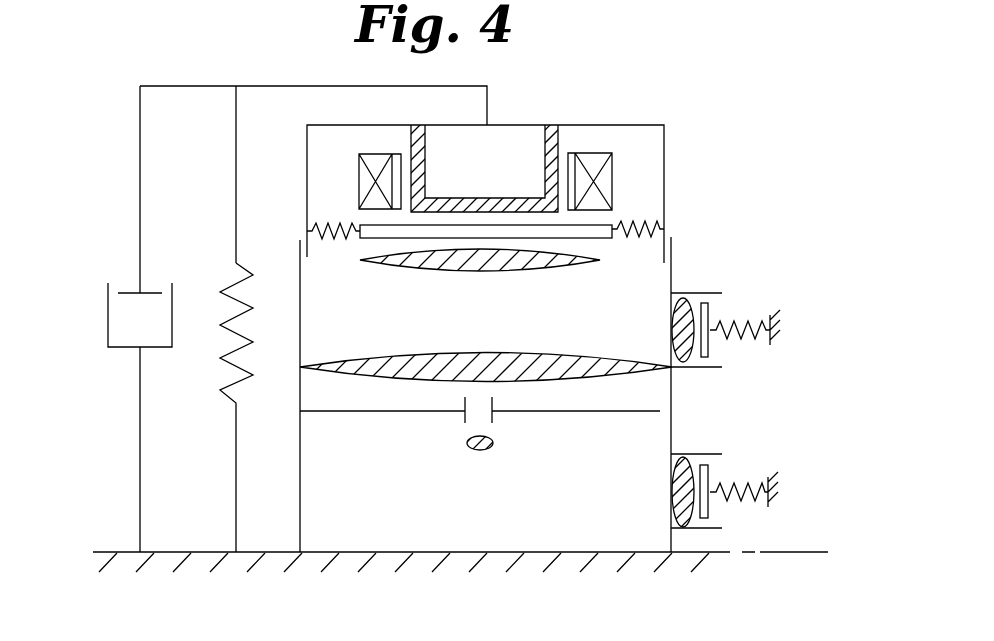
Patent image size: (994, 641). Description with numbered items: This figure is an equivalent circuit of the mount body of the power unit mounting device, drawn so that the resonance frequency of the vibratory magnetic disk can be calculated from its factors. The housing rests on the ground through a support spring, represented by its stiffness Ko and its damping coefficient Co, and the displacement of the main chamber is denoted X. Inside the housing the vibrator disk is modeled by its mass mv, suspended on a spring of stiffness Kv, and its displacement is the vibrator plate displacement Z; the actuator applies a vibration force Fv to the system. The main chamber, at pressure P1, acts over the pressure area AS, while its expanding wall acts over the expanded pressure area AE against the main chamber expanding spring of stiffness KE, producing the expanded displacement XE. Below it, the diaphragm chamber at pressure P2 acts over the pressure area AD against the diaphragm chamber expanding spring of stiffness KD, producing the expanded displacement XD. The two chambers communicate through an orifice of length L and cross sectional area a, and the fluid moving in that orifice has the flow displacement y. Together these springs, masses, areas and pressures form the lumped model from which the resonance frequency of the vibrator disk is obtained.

The damping coefficient of the support spring Co is at (130, 394).
The stiffness of the support spring Ko is at (223, 399).
The mass of the vibrator disk mv is at (634, 143).
The stiffness of the vibrator disk Kv is at (497, 350).
The displacement of the main chamber X is at (680, 127).
The displacement of the vibrator plate Z is at (675, 228).
The expanded displacement of the main chamber XE is at (683, 262).
The expanded displacement of the diaphragm chamber XD is at (683, 424).
The pressure in the main chamber P1 is at (511, 394).
The pressure area of the main chamber AS is at (497, 350).
The expanded pressure area AE is at (497, 350).
The stiffness of the main chamber expanding spring KE is at (740, 336).
The pressure area of the diaphragm chamber AD is at (497, 350).
The stiffness of the diaphragm chamber expanding spring KD is at (739, 499).
The length of the orifice L is at (496, 397).
The displacement of flow in the orifice y is at (430, 418).
The cross sectional area of the orifice a is at (497, 350).
The pressure in the diaphragm chamber P2 is at (460, 544).
The vibration force of the actuator Fv is at (820, 552).